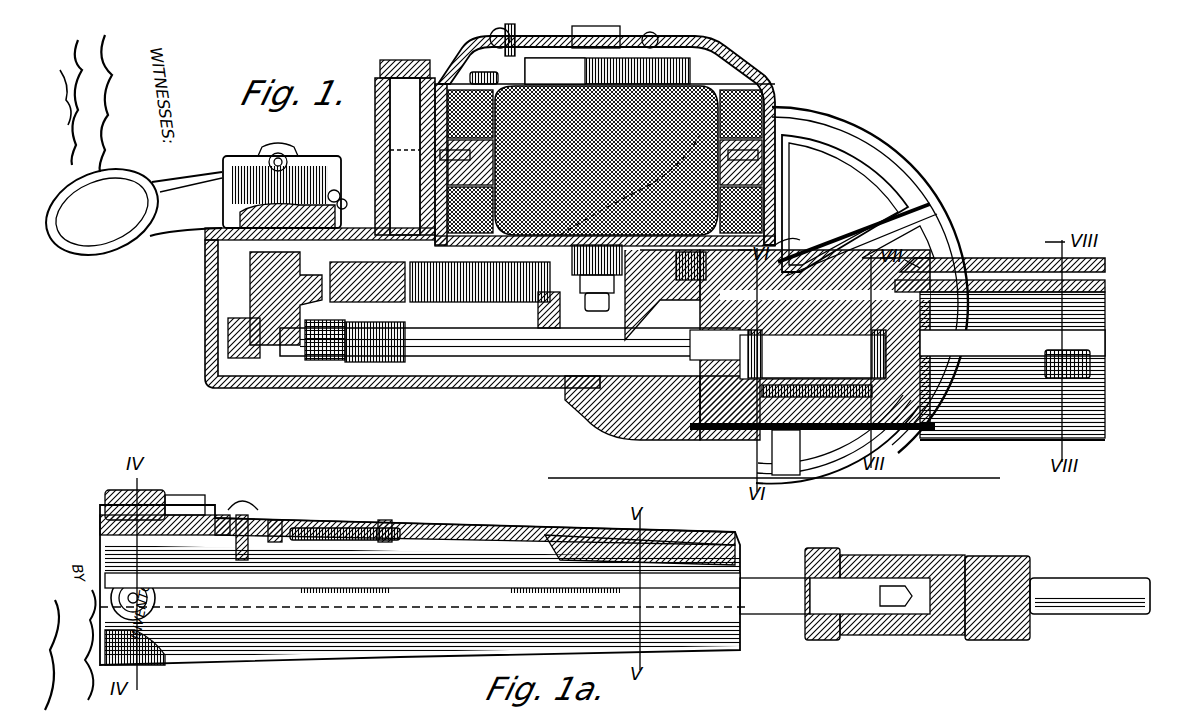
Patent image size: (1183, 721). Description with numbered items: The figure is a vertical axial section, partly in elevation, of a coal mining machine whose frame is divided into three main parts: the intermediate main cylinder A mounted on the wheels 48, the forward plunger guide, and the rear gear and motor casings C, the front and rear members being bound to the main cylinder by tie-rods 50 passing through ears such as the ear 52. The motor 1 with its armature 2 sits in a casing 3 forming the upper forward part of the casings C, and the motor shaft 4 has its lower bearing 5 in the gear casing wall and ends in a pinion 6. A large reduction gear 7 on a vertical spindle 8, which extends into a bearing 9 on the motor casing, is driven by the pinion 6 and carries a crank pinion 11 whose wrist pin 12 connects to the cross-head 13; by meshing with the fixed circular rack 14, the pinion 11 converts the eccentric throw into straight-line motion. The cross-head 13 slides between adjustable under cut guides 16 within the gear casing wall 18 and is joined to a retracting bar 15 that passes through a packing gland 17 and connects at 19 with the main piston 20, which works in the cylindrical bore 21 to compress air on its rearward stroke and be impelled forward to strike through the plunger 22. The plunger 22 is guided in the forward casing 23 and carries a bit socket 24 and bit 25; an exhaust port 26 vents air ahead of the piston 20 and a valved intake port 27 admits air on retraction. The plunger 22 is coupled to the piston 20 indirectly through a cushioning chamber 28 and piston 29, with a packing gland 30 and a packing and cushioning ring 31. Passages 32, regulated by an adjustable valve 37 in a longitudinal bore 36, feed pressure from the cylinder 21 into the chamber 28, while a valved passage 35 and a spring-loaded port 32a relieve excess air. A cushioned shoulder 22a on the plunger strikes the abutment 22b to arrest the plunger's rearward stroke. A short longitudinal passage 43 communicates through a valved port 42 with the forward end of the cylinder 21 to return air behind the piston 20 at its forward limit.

In FIG. 1, the motor 1 is at (722, 85).
In FIG. 1, the armature 2 is at (672, 110).
In FIG. 1, the motor casing 3 is at (755, 84).
In FIG. 1, the motor shaft 4 is at (616, 275).
In FIG. 1, the lower bearing 5 is at (625, 252).
In FIG. 1, the pinion 6 is at (611, 298).
In FIG. 1, the reduction gear 7 is at (540, 312).
In FIG. 1, the spindle 8 is at (403, 156).
In FIG. 1, the bearing 9 is at (380, 118).
In FIG. 1, the crank pinion 11 is at (392, 300).
In FIG. 1, the wrist pin 12 is at (242, 365).
In FIG. 1, the cross-head 13 is at (322, 365).
In FIG. 1, the fixed circular rack 14 is at (490, 302).
In FIG. 1, the retracting bar 15 is at (525, 360).
In FIG. 1, the under cut guides 16 is at (405, 362).
In FIG. 1, the packing gland 17 is at (625, 422).
In FIG. 1, the casing 18 is at (205, 325).
In FIG. 1, the connection 19 is at (812, 340).
In FIG. 1, the main piston 20 is at (690, 440).
In FIG. 1, the cylindrical bore 21 is at (990, 282).
In FIG. 1, the plunger 22 is at (1096, 340).
In FIG. 1a, the plunger 22 is at (105, 575).
In FIG. 1a, the cushioned shoulder 22a is at (322, 522).
In FIG. 1a, the abutment 22b is at (242, 505).
In FIG. 1a, the forward extension or casing 23 is at (468, 532).
In FIG. 1a, the bit socket 24 is at (880, 562).
In FIG. 1a, the bit 25 is at (1060, 582).
In FIG. 1, the exhaust port 26 is at (1095, 362).
In FIG. 1a, the valved intake port 27 is at (110, 592).
In FIG. 1, the cushioning chamber 28 is at (817, 354).
In FIG. 1, the piston 29 is at (817, 367).
In FIG. 1, the packing gland 30 is at (1012, 366).
In FIG. 1, the packing and cushioning ring 31 is at (858, 300).
In FIG. 1, the passages 32 is at (817, 389).
In FIG. 1, the port 32a is at (790, 262).
In FIG. 1, the valved passage 35 is at (925, 262).
In FIG. 1, the longitudinal bore 36 is at (805, 450).
In FIG. 1, the adjustable valve 37 is at (842, 450).
In FIG. 1a, the valved port 42 is at (178, 512).
In FIG. 1, the longitudinal passage 43 is at (1105, 268).
In FIG. 1a, the longitudinal passage 43 is at (105, 520).
In FIG. 1, the wheels 48 is at (905, 178).
In FIG. 1, the tie-rods 50 is at (945, 438).
In FIG. 1a, the ear 52 is at (165, 668).
In FIG. 1, the main cylinder A is at (1015, 258).
In FIG. 1a, the barrel B is at (415, 528).
In FIG. 1, the casings C is at (448, 412).